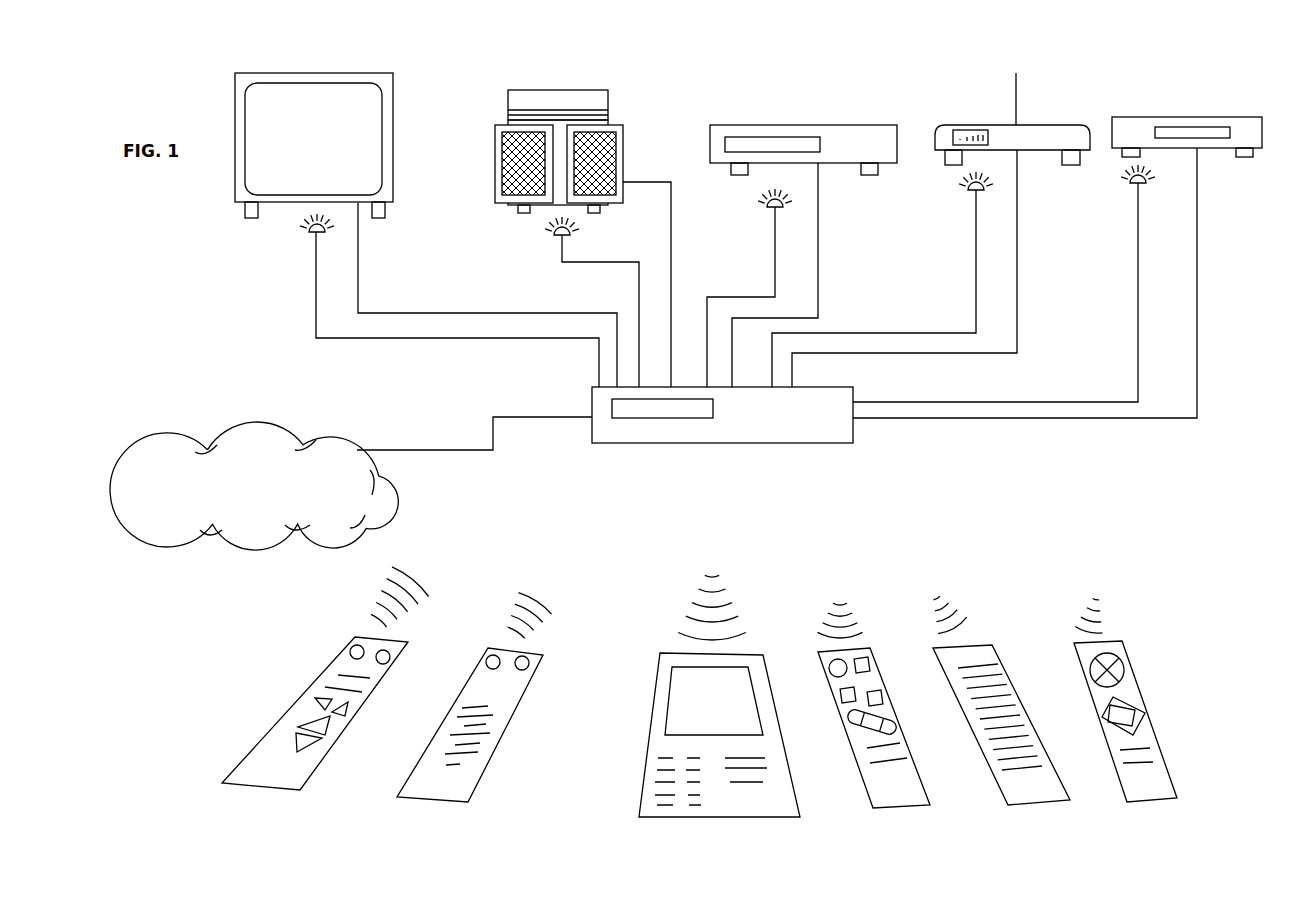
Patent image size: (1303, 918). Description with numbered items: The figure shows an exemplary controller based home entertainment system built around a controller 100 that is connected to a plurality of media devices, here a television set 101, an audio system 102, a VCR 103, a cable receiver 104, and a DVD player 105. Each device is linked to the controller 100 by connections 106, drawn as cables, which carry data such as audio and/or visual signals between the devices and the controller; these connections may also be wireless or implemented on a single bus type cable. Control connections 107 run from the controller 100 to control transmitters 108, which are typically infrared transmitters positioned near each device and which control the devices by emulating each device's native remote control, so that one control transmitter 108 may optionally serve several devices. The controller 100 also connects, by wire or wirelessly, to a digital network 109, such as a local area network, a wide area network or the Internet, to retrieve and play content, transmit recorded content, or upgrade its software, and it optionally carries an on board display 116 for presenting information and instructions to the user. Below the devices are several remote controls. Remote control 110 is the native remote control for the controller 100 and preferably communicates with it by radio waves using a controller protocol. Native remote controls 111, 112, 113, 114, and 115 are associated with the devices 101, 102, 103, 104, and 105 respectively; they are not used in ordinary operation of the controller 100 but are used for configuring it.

The controller 100 is at (837, 428).
The television set 101 is at (332, 78).
The audio system 102 is at (590, 97).
The VCR 103 is at (803, 131).
The cable receiver 104 is at (1053, 127).
The DVD player 105 is at (1198, 115).
The connections 106 is at (452, 312).
The control connections 107 is at (427, 338).
The control transmitters 108 is at (310, 232).
The digital network 109 is at (370, 490).
The remote control 110 is at (652, 780).
The native remote control 111 is at (275, 747).
The native remote control 112 is at (422, 777).
The native remote control 113 is at (877, 790).
The native remote control 114 is at (1015, 790).
The native remote control 115 is at (1117, 743).
The on board display 116 is at (690, 408).